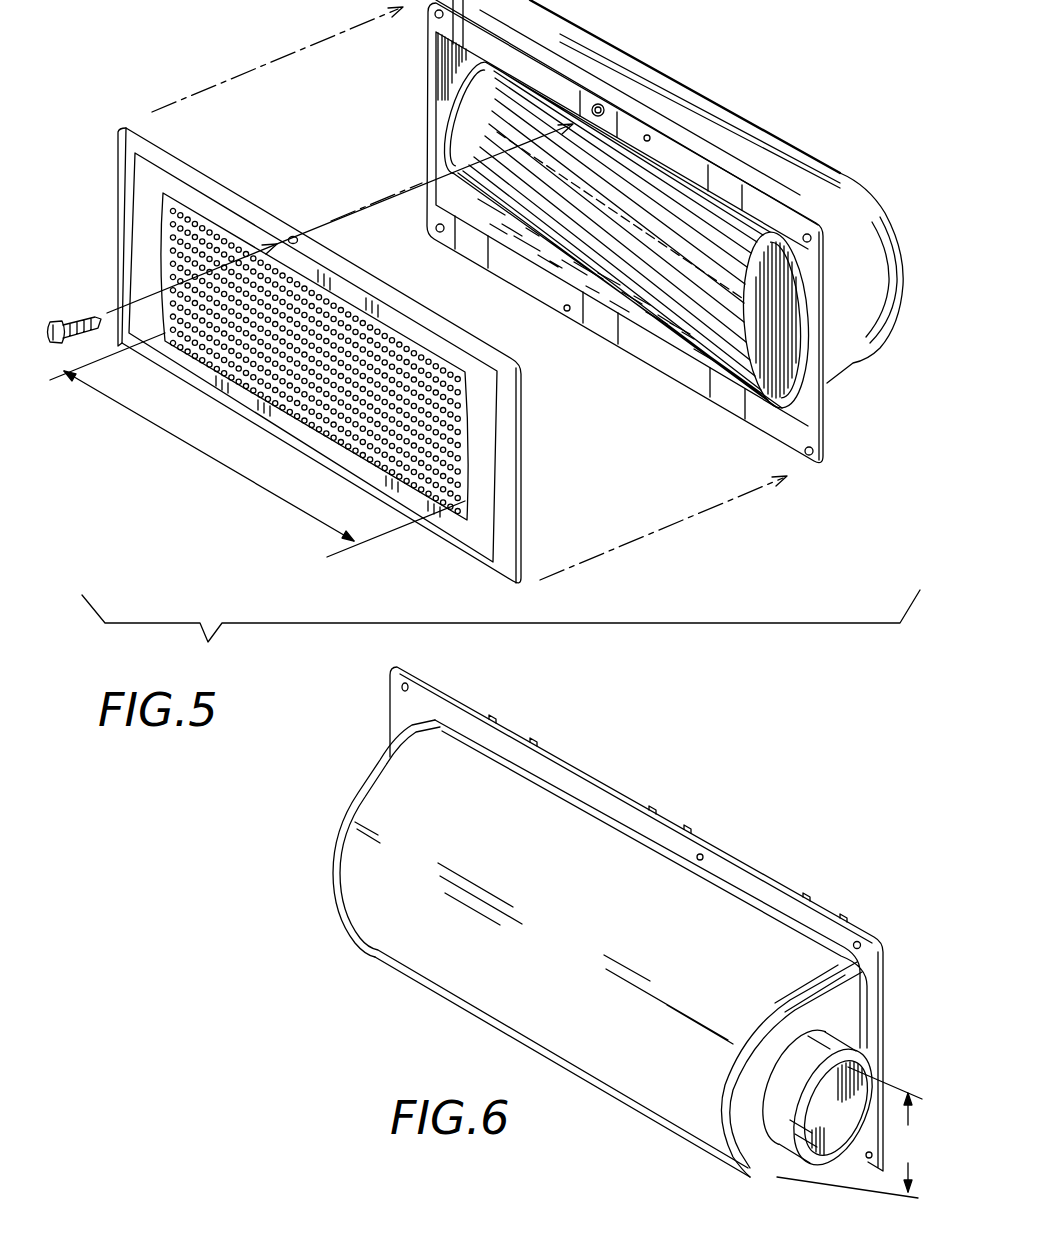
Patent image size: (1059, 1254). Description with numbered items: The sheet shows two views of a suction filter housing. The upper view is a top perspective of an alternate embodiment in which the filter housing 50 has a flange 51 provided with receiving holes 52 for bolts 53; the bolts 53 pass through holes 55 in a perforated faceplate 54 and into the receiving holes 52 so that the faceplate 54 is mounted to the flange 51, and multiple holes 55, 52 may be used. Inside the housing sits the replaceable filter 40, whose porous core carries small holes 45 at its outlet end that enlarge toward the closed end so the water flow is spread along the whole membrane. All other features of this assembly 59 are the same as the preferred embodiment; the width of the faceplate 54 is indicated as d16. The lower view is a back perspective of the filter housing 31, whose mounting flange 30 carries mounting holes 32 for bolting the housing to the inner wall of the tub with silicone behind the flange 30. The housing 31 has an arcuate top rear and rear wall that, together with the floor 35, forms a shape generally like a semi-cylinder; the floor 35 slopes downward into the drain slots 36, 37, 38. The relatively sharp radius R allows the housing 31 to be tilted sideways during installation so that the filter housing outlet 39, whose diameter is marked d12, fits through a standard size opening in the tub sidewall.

In FIG. 6, the mounting flange 30 is at (487, 697).
In FIG. 6, the filter housing 31 is at (433, 988).
In FIG. 5, the mounting holes 32 is at (820, 232).
In FIG. 6, the mounting holes 32 is at (407, 687).
In FIG. 5, the floor 35 is at (685, 332).
In FIG. 6, the floor 35 is at (808, 1166).
In FIG. 5, the drain slot 36 is at (473, 246).
In FIG. 5, the drain slot 37 is at (610, 320).
In FIG. 5, the drain slot 38 is at (724, 397).
In FIG. 6, the filter housing outlet 39 is at (822, 1152).
In FIG. 5, the replaceable filter 40 is at (447, 117).
In FIG. 6, the small holes 45 is at (588, 948).
In FIG. 5, the alternate embodiment filter housing 50 is at (841, 320).
In FIG. 5, the flange 51 is at (685, 166).
In FIG. 5, the receiving holes 52 is at (598, 104).
In FIG. 5, the bolts 53 is at (80, 310).
In FIG. 5, the faceplate 54 is at (487, 539).
In FIG. 5, the holes 55 is at (294, 236).
In FIG. 5, the assembly 59 is at (208, 650).
In FIG. 6, the radius R is at (340, 852).
In FIG. 5, the width dimension d16 is at (257, 445).
In FIG. 6, the outlet diameter dimension d12 is at (855, 1132).